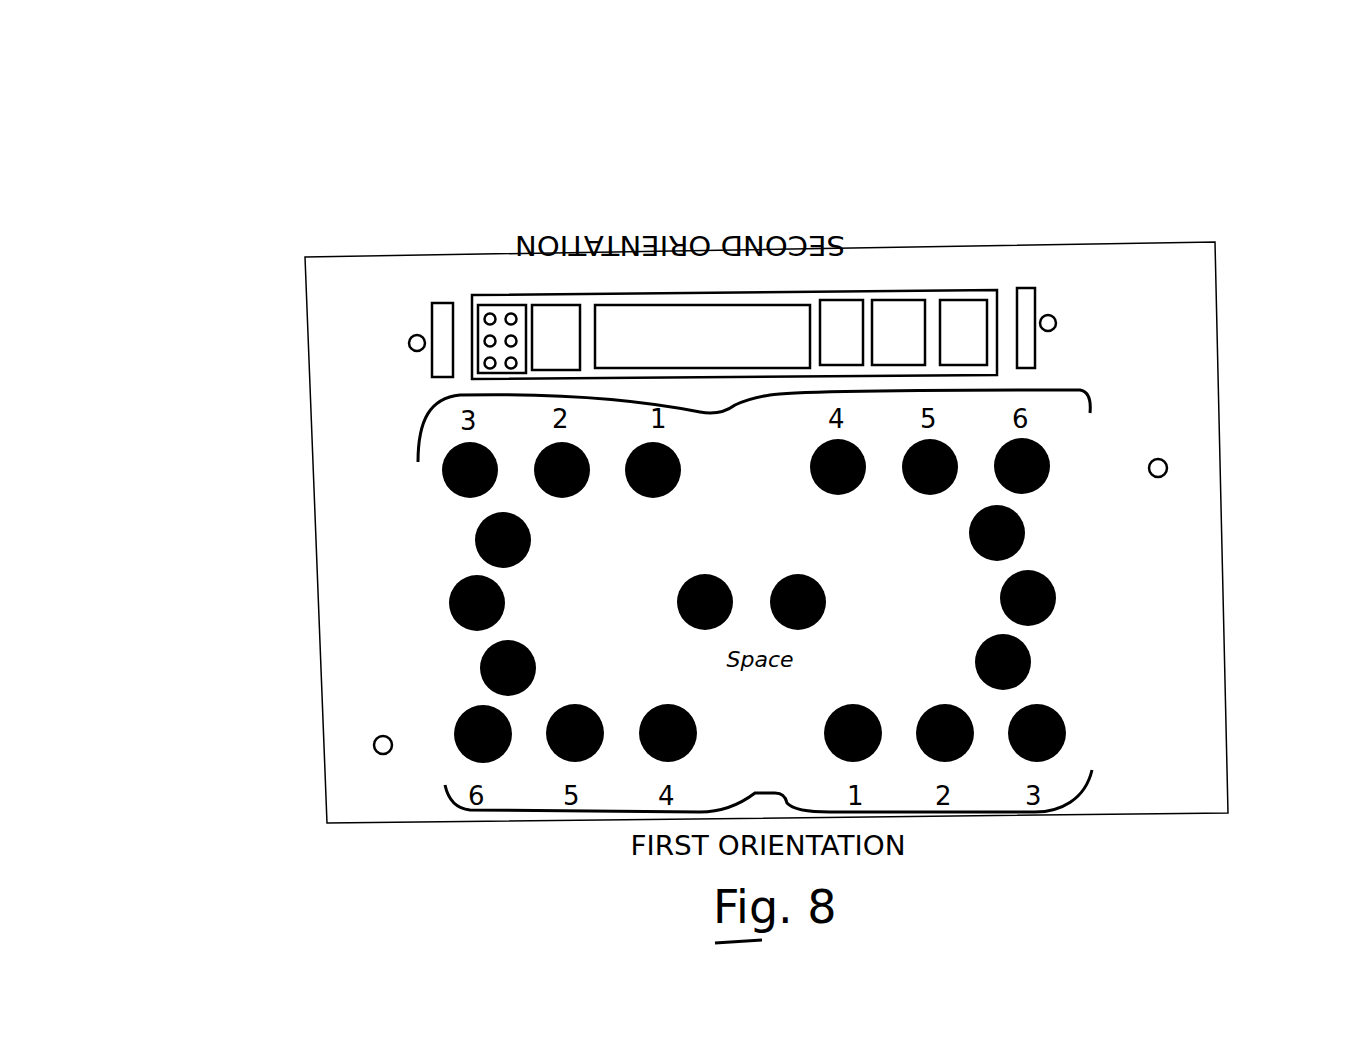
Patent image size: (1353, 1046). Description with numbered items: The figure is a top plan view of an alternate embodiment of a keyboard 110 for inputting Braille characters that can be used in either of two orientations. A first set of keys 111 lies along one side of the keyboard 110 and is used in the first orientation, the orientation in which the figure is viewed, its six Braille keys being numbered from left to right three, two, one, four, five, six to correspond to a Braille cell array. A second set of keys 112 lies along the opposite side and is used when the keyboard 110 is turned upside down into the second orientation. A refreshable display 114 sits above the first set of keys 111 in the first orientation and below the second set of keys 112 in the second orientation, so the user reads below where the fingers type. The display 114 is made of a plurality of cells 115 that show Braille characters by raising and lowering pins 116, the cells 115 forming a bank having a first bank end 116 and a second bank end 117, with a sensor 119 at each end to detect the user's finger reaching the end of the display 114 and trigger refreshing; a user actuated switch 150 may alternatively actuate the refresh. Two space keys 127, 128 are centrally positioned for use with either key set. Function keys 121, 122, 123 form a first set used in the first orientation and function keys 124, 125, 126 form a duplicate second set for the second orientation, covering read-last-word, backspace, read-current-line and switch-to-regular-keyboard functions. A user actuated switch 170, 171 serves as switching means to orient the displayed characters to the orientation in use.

The keyboard 110 is at (188, 221).
The first set of keys 111 is at (754, 414).
The second set of keys 112 is at (790, 797).
The refreshable display 114 is at (578, 292).
The cells 115 is at (547, 305).
The first bank end 116 is at (482, 303).
The second bank end 117 is at (997, 312).
The sensor 119 is at (427, 313).
The function key 121 is at (477, 522).
The function key 122 is at (463, 582).
The function key 123 is at (483, 655).
The function key 124 is at (1030, 662).
The function key 125 is at (1050, 592).
The function key 126 is at (1012, 528).
The space key 127 is at (675, 563).
The space key 128 is at (826, 563).
The user actuated switch 150 is at (409, 338).
The user actuated switch 170 is at (375, 752).
The user actuated switch 171 is at (1167, 462).